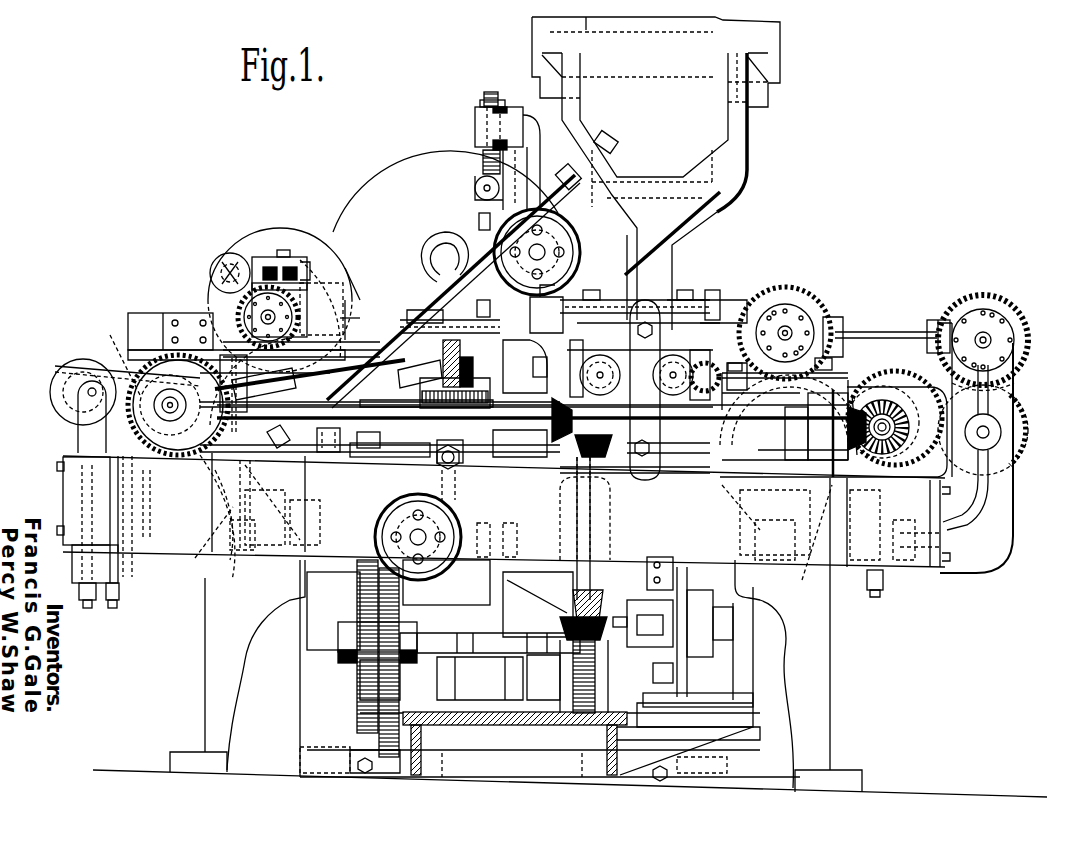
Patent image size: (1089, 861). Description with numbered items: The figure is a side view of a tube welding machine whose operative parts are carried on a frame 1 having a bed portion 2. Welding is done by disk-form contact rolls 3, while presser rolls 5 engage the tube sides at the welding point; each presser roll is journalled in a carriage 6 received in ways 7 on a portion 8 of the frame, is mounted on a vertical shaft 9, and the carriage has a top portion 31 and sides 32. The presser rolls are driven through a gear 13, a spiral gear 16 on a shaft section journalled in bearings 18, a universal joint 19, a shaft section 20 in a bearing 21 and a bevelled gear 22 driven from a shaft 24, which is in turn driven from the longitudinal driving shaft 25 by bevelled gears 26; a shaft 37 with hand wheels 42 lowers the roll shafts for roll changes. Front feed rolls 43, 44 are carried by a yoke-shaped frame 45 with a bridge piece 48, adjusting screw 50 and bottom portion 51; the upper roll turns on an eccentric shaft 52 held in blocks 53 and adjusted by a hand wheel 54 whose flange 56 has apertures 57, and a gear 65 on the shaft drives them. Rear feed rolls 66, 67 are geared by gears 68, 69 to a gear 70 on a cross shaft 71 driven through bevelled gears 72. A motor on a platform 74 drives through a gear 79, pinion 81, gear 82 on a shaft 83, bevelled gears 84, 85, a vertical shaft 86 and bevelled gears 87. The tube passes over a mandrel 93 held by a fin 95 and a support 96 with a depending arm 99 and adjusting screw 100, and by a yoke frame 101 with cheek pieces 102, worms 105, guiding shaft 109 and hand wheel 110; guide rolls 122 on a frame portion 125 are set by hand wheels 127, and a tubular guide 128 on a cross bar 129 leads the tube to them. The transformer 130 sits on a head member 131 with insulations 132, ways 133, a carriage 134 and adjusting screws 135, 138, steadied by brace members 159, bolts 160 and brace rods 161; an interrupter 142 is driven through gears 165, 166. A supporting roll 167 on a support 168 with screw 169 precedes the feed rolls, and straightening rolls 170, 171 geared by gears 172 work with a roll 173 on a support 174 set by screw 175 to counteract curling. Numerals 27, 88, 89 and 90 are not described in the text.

The frame 1 is at (213, 655).
The bed portion 2 is at (165, 556).
The contact rolls 3 is at (414, 165).
The presser rolls 5 is at (533, 345).
The carriage 6 is at (420, 350).
The ways 7 is at (373, 450).
The portion of the frame 8 is at (368, 452).
The vertical shaft 9 is at (458, 494).
The gear 13 is at (505, 372).
The spiral gear 16 is at (483, 303).
The bearings 18 is at (428, 320).
The universal joint 19 is at (378, 345).
The shaft section 20 is at (355, 340).
The bearing 21 is at (200, 357).
The bevelled gear 22 is at (160, 348).
The shaft 24 is at (170, 423).
The driving shaft 25 is at (387, 455).
The bevelled gears 26 is at (60, 368).
The nut 27 is at (456, 463).
The top portion 31 is at (440, 333).
The sides 32 is at (518, 394).
The shaft 37 is at (418, 537).
The hand wheels 42 is at (383, 512).
The feed roll 43 is at (340, 278).
The feed roll 44 is at (202, 470).
The yoke-shaped frame 45 is at (502, 540).
The bridge piece 48 is at (722, 485).
The adjusting screw 50 is at (262, 505).
The bottom portion 51 is at (285, 553).
The shaft 52 is at (270, 312).
The blocks 53 is at (308, 290).
The hand wheel 54 is at (345, 268).
The flange 56 is at (262, 268).
The apertures 57 is at (235, 318).
The gear 65 is at (117, 365).
The feed roll 66 is at (828, 295).
The feed roll 67 is at (846, 371).
The gear 68 is at (775, 290).
The gear 69 is at (838, 358).
The gear 70 is at (885, 373).
The cross shaft 71 is at (890, 428).
The bevelled gears 72 is at (905, 456).
The base or platform 74 is at (533, 727).
The gear 79 is at (357, 692).
The pinion 81 is at (358, 610).
The gear 82 is at (378, 743).
The shaft 83 is at (477, 657).
The bevelled gear 84 is at (540, 663).
The bevelled gear 85 is at (570, 617).
The vertical shaft 86 is at (600, 528).
The bevelled gears 87 is at (595, 455).
The shaft 88 is at (477, 630).
The bearing 89 is at (483, 565).
The bolt 90 is at (497, 530).
The mandrel 93 is at (133, 380).
The supporting fin 95 is at (345, 318).
The support 96 is at (160, 317).
The depending arm 99 is at (143, 540).
The adjusting screw 100 is at (115, 603).
The yoke-shaped frame 101 is at (352, 300).
The cheek pieces 102 is at (294, 230).
The worm 105 is at (295, 265).
The guiding shaft 109 is at (228, 262).
The hand wheel 110 is at (221, 257).
The guide rolls 122 is at (712, 362).
The portion of the frame 125 is at (698, 321).
The hand wheel 127 is at (672, 421).
The tubular guide member 128 is at (566, 355).
The cross bar 129 is at (640, 342).
The transformer 130 is at (693, 117).
The head member 131 is at (722, 202).
The insulations 132 is at (672, 300).
The ways 133 is at (573, 283).
The carriage 134 is at (528, 124).
The adjusting screw 135 is at (546, 250).
The adjusting screw 138 is at (486, 92).
The interrupter 142 is at (720, 643).
The brace members 159 is at (737, 153).
The bolts 160 is at (642, 390).
The brace rods 161 is at (447, 242).
The gear 165 is at (595, 696).
The gear 166 is at (598, 655).
The supporting roll 167 is at (80, 358).
The support 168 is at (80, 437).
The adjusting screw 169 is at (88, 606).
The straightening roll 170 is at (1008, 308).
The straightening roll 171 is at (1030, 432).
The gears 172 is at (1031, 323).
The roll 173 is at (906, 388).
The support 174 is at (943, 533).
The adjusting screw 175 is at (882, 590).